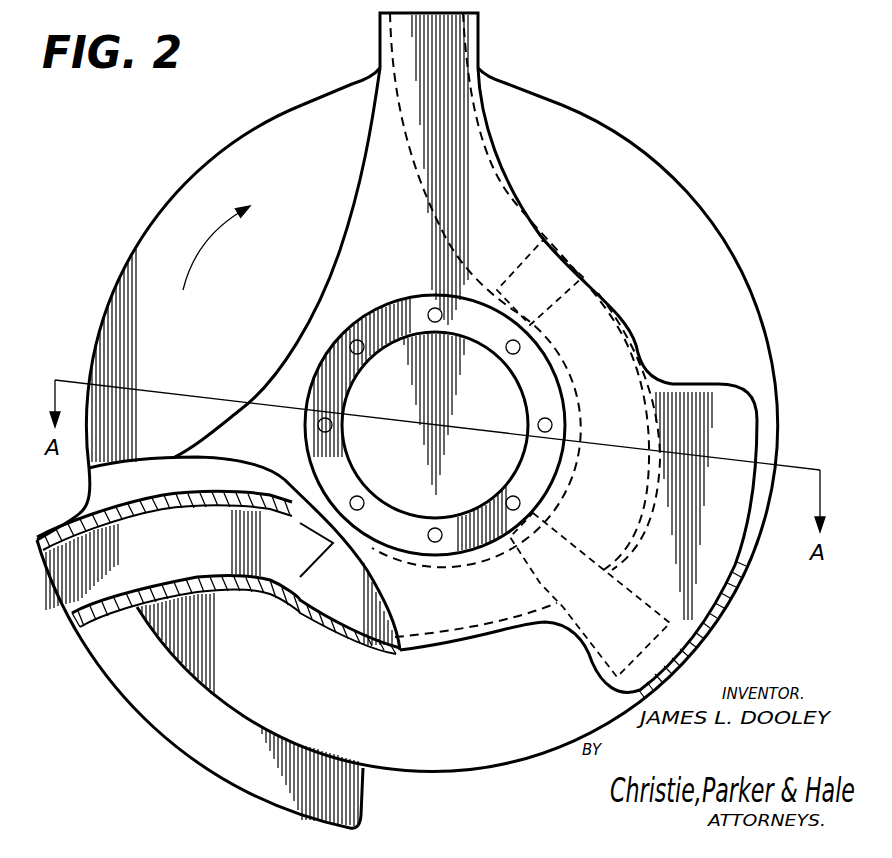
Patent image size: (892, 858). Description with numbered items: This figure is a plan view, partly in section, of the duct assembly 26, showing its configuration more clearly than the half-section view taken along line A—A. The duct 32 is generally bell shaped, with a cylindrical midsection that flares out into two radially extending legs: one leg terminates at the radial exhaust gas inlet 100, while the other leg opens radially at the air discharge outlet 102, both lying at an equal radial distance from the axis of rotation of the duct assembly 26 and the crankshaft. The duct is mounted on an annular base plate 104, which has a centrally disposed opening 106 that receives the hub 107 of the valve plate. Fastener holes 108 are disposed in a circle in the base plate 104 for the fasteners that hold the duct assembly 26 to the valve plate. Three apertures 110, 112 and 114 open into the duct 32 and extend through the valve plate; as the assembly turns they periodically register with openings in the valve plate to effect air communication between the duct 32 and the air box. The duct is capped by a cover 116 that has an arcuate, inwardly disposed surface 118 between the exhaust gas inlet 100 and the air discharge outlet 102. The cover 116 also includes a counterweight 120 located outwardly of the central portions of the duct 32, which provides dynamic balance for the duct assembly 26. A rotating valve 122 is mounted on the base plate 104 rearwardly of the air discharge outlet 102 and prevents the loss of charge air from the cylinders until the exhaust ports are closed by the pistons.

The radial exhaust gas inlet 100 is at (470, 12).
The duct 32 is at (462, 137).
The annular base plate 104 is at (672, 182).
The duct assembly 26 is at (733, 230).
The cover 116 is at (345, 229).
The aperture 114 is at (566, 270).
The arcuate inwardly disposed surface 118 is at (290, 345).
The centrally disposed opening 106 is at (464, 394).
The fastener holes 108 is at (505, 350).
The hub 107 is at (519, 462).
The aperture 112 is at (543, 580).
The aperture 110 is at (260, 571).
The air discharge outlet 102 is at (63, 613).
The counterweight 120 is at (693, 590).
The rotating valve 122 is at (183, 747).